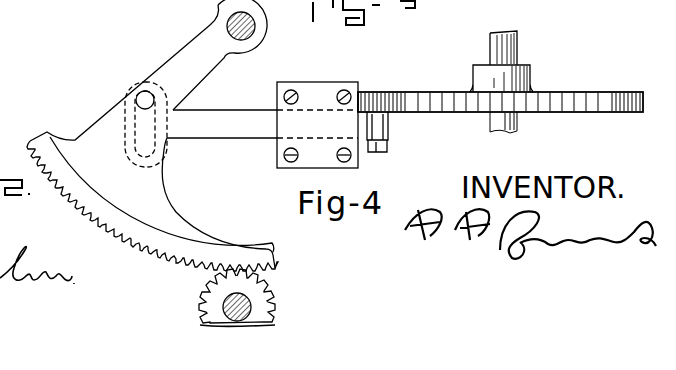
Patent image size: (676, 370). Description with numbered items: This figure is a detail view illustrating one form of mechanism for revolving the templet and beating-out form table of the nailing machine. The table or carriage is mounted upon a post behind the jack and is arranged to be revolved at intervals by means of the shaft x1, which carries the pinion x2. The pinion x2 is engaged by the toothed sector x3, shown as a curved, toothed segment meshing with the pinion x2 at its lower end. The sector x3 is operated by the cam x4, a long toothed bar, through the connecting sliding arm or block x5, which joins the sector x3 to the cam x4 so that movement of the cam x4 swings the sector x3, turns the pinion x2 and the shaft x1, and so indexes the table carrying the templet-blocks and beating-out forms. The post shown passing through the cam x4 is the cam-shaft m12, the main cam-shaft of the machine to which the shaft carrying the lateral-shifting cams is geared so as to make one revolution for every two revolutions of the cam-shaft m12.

The shaft x1 is at (251, 300).
The pinion x2 is at (268, 308).
The sector x3 is at (97, 209).
The cam x4 is at (455, 103).
The connecting sliding arm or block x5 is at (262, 124).
The cam-shaft m12 is at (518, 38).